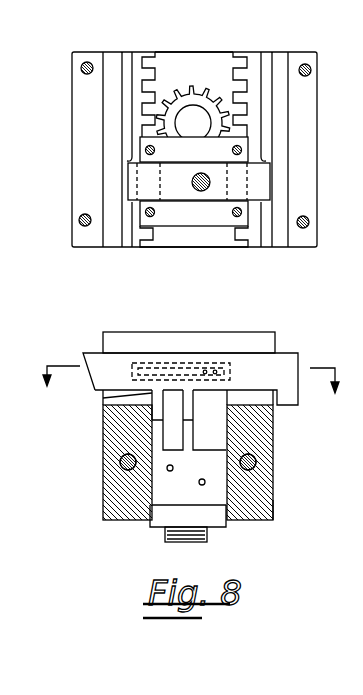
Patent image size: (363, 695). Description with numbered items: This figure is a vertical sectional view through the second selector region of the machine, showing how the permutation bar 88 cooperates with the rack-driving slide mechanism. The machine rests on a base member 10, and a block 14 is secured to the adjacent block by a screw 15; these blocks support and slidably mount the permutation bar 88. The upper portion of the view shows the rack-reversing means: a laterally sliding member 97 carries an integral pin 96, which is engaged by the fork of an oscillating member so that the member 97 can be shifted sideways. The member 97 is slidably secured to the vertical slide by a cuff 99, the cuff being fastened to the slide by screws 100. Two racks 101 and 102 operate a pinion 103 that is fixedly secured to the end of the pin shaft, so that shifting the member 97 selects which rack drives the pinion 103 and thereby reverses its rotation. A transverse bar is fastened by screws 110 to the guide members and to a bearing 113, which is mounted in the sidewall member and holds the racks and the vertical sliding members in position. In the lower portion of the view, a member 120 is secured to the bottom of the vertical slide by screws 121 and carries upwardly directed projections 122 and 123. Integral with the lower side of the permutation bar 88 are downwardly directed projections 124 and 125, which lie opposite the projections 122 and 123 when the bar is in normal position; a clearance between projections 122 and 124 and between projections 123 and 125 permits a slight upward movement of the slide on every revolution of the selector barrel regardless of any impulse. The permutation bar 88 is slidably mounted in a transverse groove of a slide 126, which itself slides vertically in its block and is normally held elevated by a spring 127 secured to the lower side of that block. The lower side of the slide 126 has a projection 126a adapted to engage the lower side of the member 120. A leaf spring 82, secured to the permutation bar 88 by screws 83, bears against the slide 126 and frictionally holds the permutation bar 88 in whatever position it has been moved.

The base member 10 is at (182, 392).
The block 14 is at (273, 500).
The screw 15 is at (103, 460).
The leaf spring 82 is at (163, 366).
The screws 83 is at (215, 368).
The permutation bar 88 is at (288, 363).
The pin 96 is at (192, 180).
The laterally sliding member 97 is at (272, 179).
The cuff 99 is at (214, 223).
The screws 100 is at (231, 150).
The rack 101 is at (265, 52).
The rack 102 is at (140, 40).
The pinion 103 is at (195, 90).
The screws 110 is at (81, 67).
The bearing 113 is at (72, 160).
The member 120 is at (200, 482).
The screws 121 is at (178, 480).
The projection 122 is at (156, 438).
The projection 123 is at (191, 438).
The projection 124 is at (103, 398).
The projection 125 is at (192, 407).
The slide 126 is at (225, 336).
The projection 126a is at (218, 518).
The spring 127 is at (173, 538).